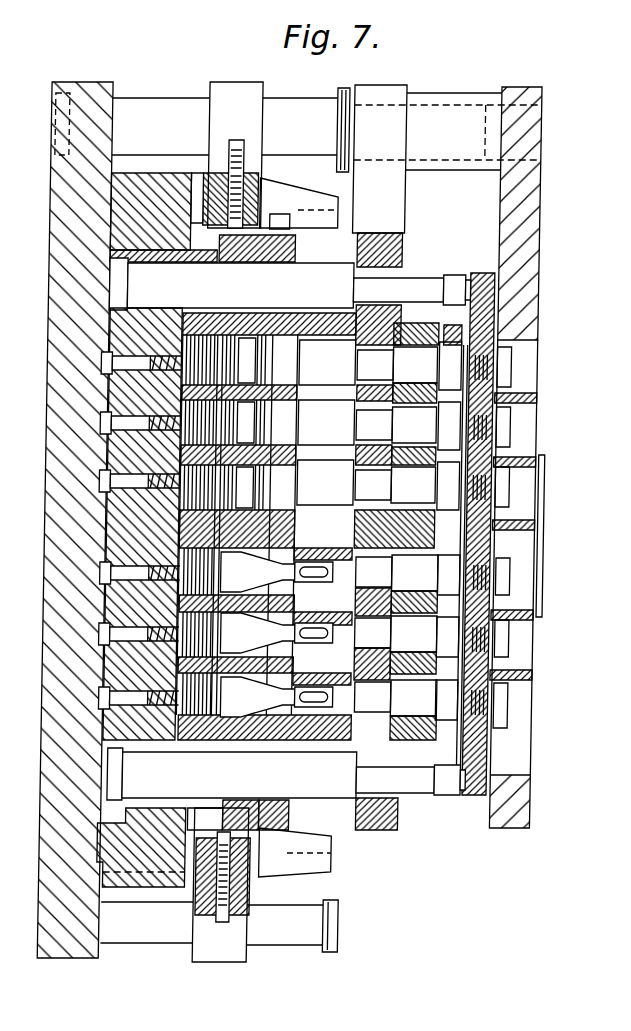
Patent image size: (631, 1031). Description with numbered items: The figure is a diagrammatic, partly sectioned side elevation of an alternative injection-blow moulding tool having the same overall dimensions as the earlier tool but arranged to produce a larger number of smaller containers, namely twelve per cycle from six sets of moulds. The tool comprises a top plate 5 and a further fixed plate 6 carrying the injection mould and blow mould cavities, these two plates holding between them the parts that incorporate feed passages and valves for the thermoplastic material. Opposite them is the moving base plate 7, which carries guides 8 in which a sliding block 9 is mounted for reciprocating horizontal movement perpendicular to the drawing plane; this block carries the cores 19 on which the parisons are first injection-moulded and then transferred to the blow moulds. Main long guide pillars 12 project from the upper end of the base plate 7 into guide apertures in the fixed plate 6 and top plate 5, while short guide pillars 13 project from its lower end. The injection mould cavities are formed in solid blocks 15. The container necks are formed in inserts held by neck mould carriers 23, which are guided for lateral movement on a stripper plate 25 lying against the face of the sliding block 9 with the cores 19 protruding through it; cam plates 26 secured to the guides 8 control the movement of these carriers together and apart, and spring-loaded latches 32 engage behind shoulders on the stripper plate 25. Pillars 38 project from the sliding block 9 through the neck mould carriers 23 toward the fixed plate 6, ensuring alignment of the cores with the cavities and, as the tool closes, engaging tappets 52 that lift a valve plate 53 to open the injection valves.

The top plate 5 is at (528, 236).
The fixed plate 6 is at (398, 215).
The moving base plate 7 is at (62, 237).
The guides 8 is at (135, 192).
The sliding block 9 is at (132, 399).
The main long guide pillars 12 is at (302, 104).
The short guide pillars 13 is at (335, 928).
The solid blocks 15 is at (334, 375).
The cores 19 is at (315, 575).
The neck mould carriers 23 is at (312, 840).
The stripper plate 25 is at (243, 820).
The cam plates 26 is at (338, 868).
The spring-loaded latches 32 is at (262, 202).
The pillars 38 is at (232, 298).
The tappets 52 is at (438, 792).
The valve plate 53 is at (492, 790).